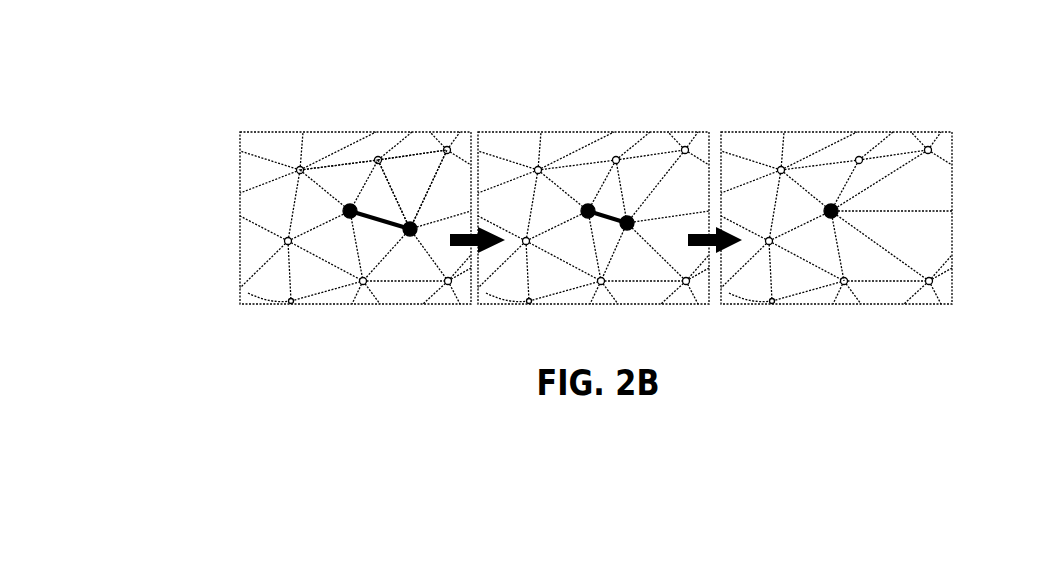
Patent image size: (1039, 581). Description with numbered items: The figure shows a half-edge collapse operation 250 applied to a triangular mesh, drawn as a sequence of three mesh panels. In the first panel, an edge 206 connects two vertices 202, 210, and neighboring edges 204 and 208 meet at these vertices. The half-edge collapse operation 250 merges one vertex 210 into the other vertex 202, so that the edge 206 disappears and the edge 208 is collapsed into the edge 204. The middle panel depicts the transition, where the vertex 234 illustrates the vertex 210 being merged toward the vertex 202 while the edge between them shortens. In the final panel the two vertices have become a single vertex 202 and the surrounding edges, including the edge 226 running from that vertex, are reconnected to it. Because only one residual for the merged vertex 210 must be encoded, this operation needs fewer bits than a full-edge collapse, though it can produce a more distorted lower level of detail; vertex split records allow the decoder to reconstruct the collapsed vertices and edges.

The half-edge collapse operation 250 is at (131, 126).
The vertex 202 is at (347, 204).
The edge 204 is at (339, 108).
The edge 206 is at (422, 118).
The edge 208 is at (456, 121).
The vertex 210 is at (469, 149).
The vertex 234 is at (684, 144).
The edge after collapse 226 is at (864, 291).